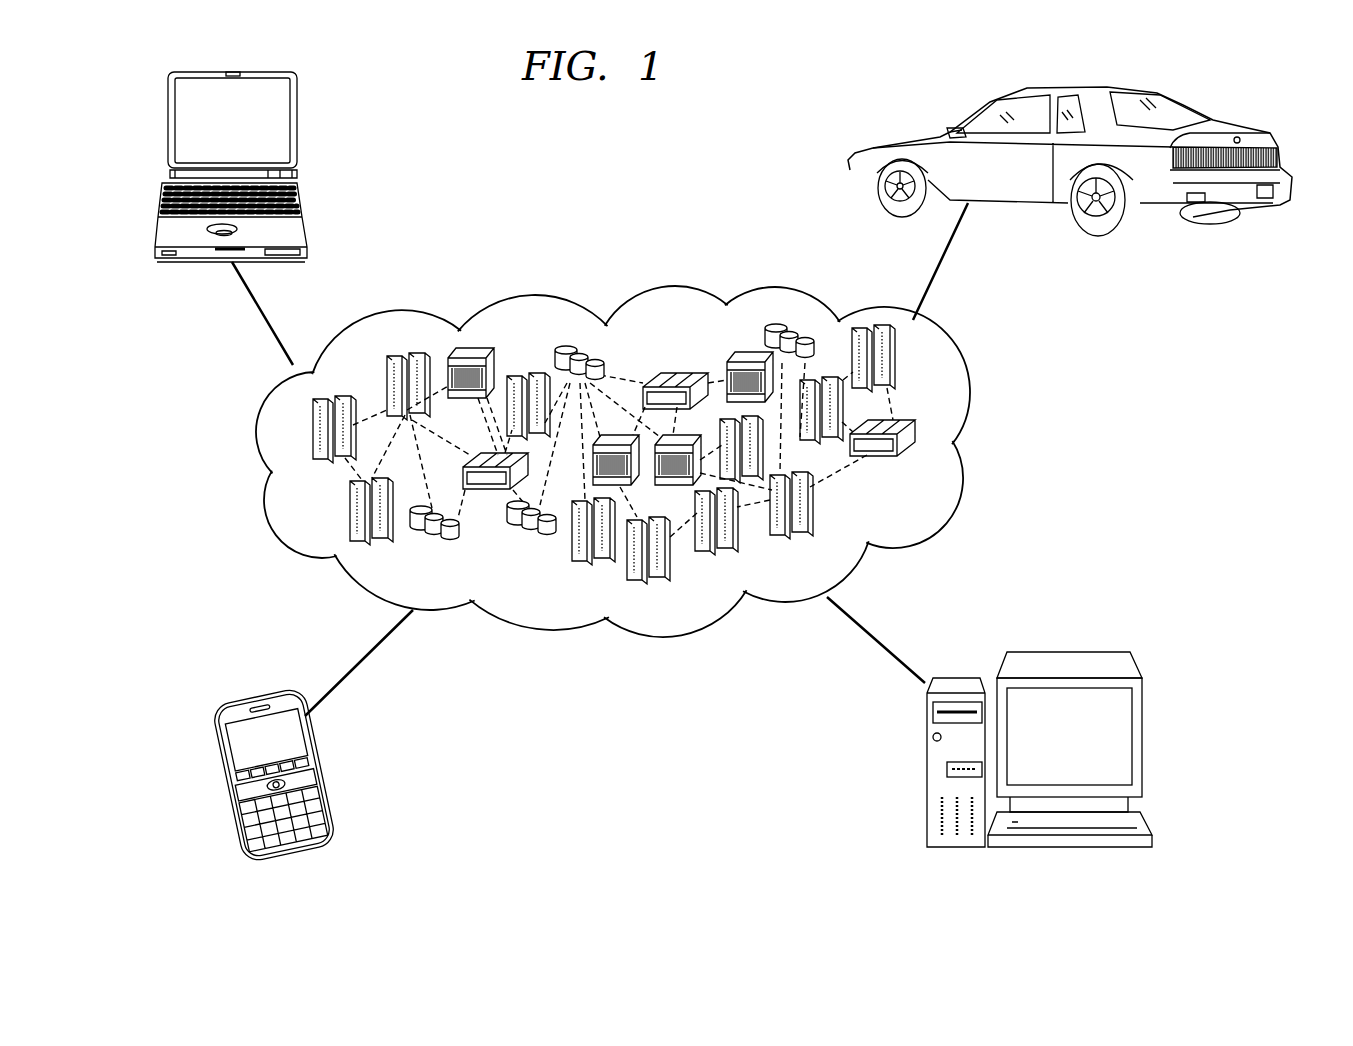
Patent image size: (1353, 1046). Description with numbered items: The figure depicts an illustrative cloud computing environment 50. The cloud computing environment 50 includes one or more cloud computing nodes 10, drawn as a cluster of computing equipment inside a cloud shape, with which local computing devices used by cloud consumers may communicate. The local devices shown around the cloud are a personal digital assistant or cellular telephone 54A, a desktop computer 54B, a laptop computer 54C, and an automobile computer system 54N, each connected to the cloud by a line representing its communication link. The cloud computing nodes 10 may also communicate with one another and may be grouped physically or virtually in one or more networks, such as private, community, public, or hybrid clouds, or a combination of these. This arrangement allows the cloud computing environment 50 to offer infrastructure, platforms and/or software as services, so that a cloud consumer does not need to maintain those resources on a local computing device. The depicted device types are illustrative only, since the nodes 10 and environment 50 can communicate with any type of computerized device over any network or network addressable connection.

The cloud computing node 10 is at (920, 463).
The cloud computing environment 50 is at (644, 461).
The personal digital assistant or cellular telephone 54A is at (214, 764).
The desktop computer 54B is at (1067, 652).
The laptop computer 54C is at (164, 117).
The automobile computer system 54N is at (1251, 130).